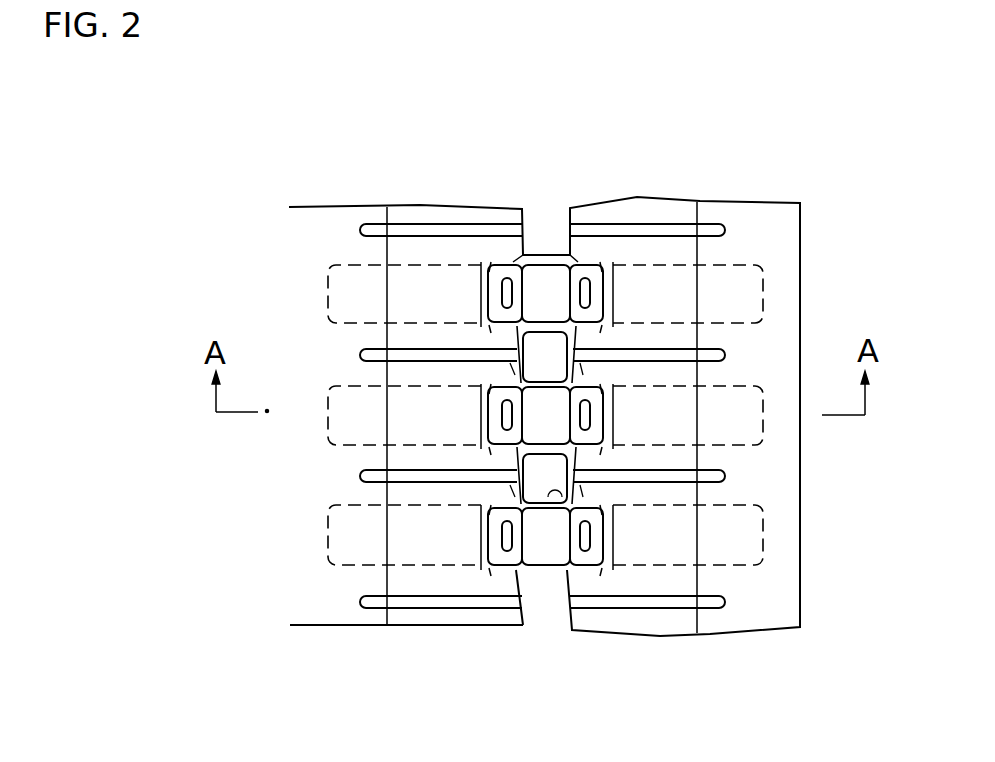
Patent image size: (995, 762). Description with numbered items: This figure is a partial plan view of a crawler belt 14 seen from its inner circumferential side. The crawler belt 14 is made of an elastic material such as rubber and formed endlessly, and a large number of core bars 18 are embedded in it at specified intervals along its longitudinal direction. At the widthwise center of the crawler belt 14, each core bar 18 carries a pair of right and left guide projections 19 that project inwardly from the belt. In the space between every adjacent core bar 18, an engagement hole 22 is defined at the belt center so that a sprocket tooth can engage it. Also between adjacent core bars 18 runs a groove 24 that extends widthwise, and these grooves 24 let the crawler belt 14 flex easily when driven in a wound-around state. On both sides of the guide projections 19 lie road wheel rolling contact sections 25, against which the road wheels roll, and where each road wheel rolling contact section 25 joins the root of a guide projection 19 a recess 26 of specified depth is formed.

The crawler belt 14 is at (803, 272).
The core bar 18 is at (683, 297).
The guide projection 19 is at (504, 291).
The engagement hole 22 is at (557, 492).
The groove 24 is at (403, 471).
The road wheel rolling contact section 25 is at (407, 580).
The recess 26 is at (483, 548).